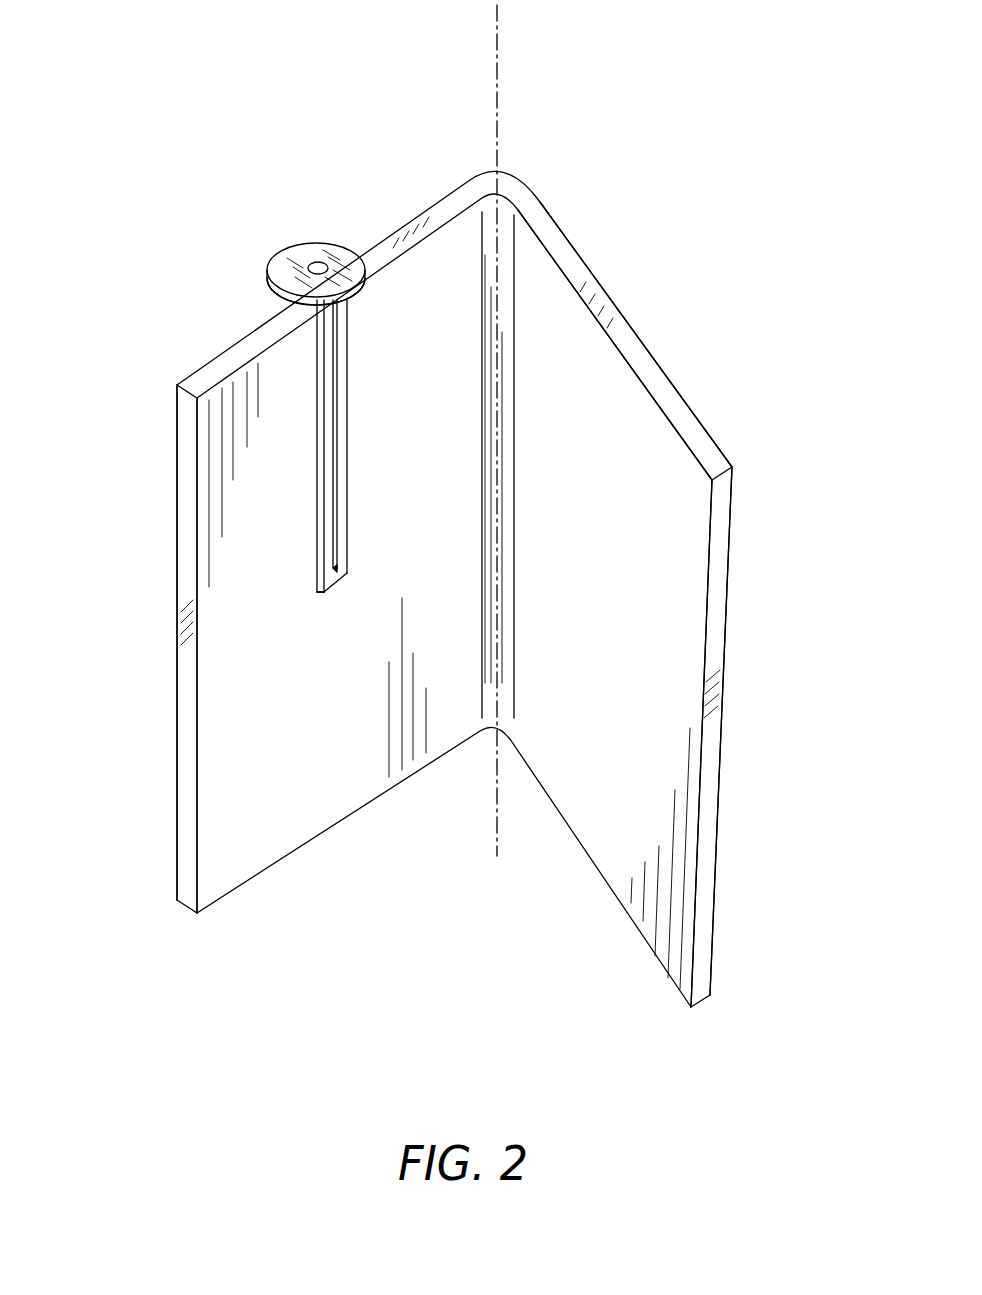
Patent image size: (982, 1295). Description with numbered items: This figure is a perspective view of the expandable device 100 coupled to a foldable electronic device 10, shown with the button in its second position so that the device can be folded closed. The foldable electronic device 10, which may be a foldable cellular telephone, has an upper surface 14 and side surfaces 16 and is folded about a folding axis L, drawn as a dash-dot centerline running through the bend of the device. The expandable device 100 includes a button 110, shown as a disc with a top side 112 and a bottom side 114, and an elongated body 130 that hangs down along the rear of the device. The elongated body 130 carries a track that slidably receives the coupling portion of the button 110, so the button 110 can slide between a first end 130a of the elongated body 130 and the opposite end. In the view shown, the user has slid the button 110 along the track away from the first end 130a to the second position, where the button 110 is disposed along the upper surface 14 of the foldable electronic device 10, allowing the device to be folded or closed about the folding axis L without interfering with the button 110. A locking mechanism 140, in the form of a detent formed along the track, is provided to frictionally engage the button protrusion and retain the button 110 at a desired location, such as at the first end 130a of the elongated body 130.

The foldable electronic device 10 is at (642, 362).
The upper surface 14 is at (703, 448).
The side surfaces 16 is at (190, 798).
The expandable device 100 is at (252, 374).
The button 110 is at (252, 224).
The top side 112 is at (288, 279).
The bottom side 114 is at (268, 296).
The elongated body 130 is at (209, 486).
The first end 130a is at (312, 601).
The locking mechanism 140 is at (334, 535).
The folding axis L is at (497, 67).